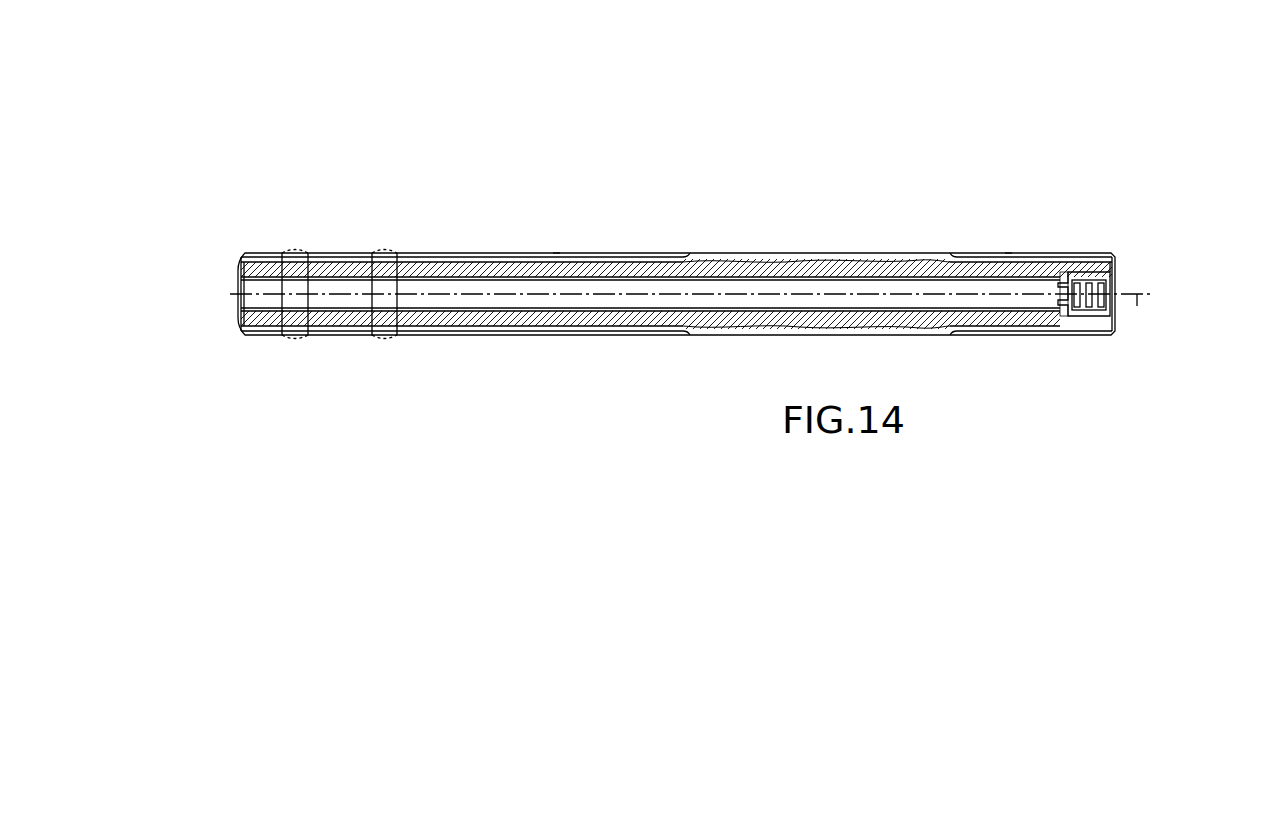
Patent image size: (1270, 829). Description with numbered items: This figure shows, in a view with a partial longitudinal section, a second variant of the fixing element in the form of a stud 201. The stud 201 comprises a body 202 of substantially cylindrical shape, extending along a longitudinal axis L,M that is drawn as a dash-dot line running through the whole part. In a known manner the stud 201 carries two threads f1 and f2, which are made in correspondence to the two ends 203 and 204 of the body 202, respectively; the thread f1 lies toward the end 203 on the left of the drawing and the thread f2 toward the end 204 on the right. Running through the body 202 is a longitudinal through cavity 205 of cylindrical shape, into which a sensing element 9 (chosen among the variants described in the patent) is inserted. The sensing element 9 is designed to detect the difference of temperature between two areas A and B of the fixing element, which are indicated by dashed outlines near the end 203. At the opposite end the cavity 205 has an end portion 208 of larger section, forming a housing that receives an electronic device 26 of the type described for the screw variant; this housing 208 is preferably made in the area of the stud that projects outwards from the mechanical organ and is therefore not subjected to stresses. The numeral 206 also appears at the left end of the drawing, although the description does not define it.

The stud 201 is at (962, 149).
The body 202 is at (813, 265).
The end 203 is at (239, 260).
The end 204 is at (1126, 277).
The longitudinal through cavity 205 is at (594, 284).
The proximal end 206 is at (232, 280).
The end portion 208 is at (1110, 303).
The electronic device 26 is at (1089, 270).
The sensing element 9 is at (465, 292).
The thread f1 is at (558, 256).
The thread f2 is at (1012, 255).
The area A is at (300, 340).
The area B is at (385, 340).
The longitudinal axis L,M is at (1137, 308).